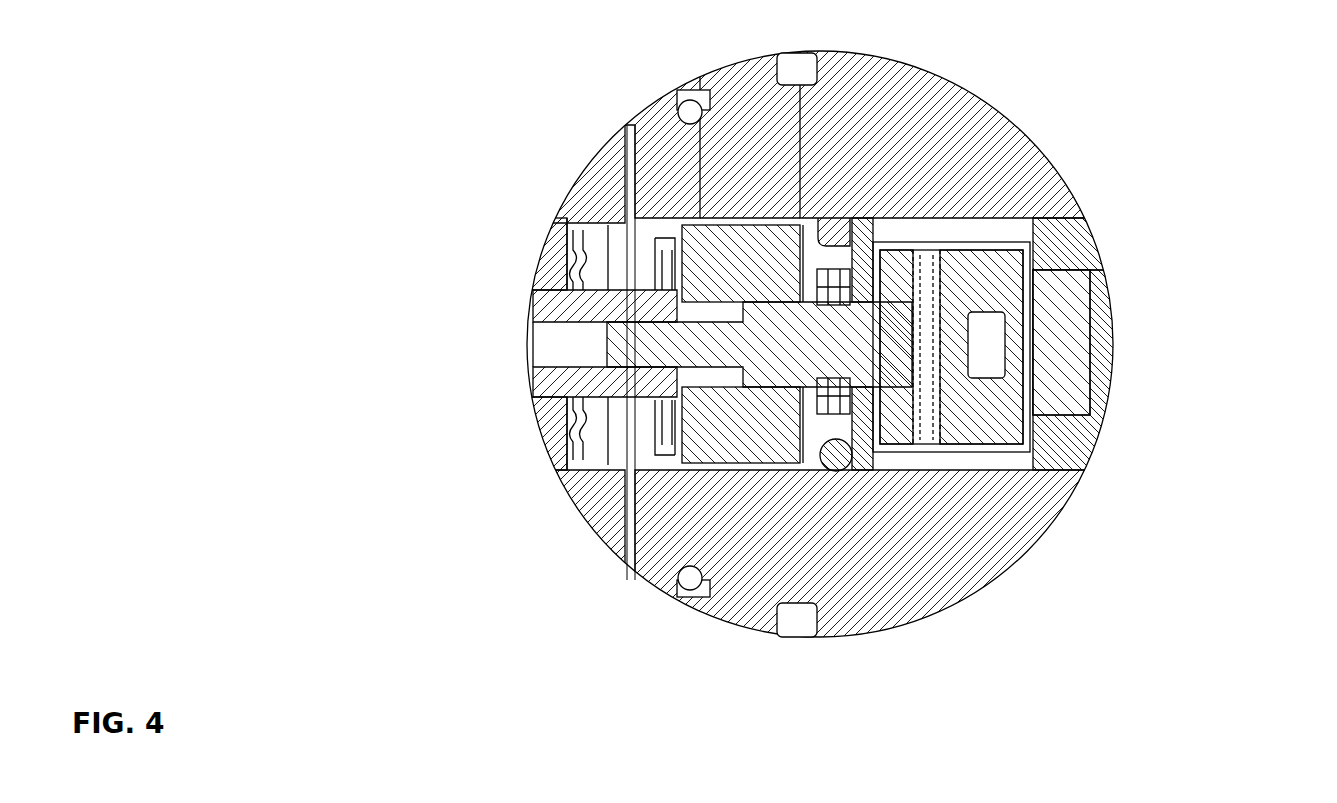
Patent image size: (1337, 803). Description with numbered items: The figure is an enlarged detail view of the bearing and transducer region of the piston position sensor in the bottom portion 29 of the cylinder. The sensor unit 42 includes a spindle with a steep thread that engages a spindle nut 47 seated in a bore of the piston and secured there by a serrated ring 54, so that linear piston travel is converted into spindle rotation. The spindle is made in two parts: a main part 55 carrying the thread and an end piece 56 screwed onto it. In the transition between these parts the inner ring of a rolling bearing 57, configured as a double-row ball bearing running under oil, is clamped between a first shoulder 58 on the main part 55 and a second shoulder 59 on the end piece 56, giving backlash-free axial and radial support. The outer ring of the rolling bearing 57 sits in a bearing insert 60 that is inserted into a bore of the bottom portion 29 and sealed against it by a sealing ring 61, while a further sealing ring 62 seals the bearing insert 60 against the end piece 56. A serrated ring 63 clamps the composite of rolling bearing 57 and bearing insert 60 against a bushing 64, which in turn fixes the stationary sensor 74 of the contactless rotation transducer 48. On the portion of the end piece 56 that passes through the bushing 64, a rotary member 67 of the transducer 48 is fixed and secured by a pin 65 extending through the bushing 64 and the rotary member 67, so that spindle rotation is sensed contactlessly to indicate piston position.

The bottom portion 29 is at (996, 520).
The sensor unit 42 is at (613, 428).
The spindle nut 47 is at (548, 260).
The transducer 48 is at (1052, 412).
The serrated ring 54 is at (575, 235).
The main part 55 is at (560, 375).
The end piece 56 is at (787, 367).
The rolling bearing 57 is at (712, 240).
The first shoulder 58 is at (680, 395).
The second shoulder 59 is at (798, 418).
The bearing insert 60 is at (750, 218).
The sealing ring 61 is at (845, 232).
The sealing ring 62 is at (848, 275).
The serrated ring 63 is at (660, 250).
The bushing 64 is at (996, 458).
The pin 65 is at (913, 410).
The rotary member 67 is at (1050, 340).
The sensor 74 is at (1080, 245).